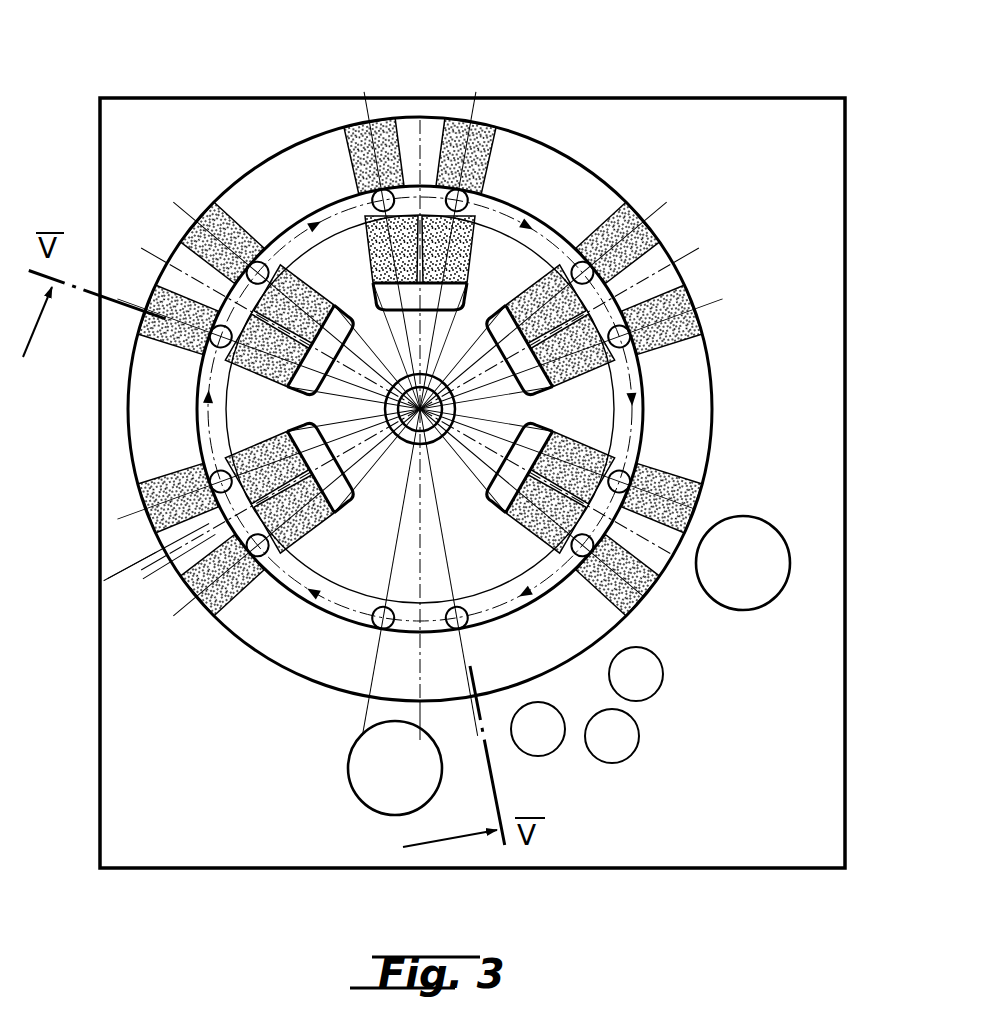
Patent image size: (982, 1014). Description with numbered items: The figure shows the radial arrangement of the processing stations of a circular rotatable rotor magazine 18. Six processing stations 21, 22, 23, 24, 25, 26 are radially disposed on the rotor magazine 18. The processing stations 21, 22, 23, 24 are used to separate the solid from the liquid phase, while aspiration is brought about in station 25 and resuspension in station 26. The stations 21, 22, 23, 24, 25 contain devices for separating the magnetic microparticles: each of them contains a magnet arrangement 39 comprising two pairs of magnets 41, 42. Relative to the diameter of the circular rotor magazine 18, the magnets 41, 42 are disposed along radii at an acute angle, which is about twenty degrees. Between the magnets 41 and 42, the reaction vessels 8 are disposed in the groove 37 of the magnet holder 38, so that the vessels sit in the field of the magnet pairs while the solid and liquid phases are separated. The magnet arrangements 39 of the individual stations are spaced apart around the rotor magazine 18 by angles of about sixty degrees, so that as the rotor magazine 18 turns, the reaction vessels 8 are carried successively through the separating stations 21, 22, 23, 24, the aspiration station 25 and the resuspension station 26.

The reaction vessel 8 is at (372, 196).
The circular rotatable rotor magazine 18 is at (616, 80).
The processing station 21 is at (162, 590).
The processing station 22 is at (160, 247).
The processing station 23 is at (438, 108).
The processing station 24 is at (678, 235).
The processing station 25 is at (679, 583).
The processing station 26 is at (352, 703).
The groove 37 is at (325, 610).
The magnet holder 38 is at (247, 633).
The magnet arrangement 39 is at (338, 143).
The magnet 41 is at (374, 258).
The magnet 42 is at (378, 125).